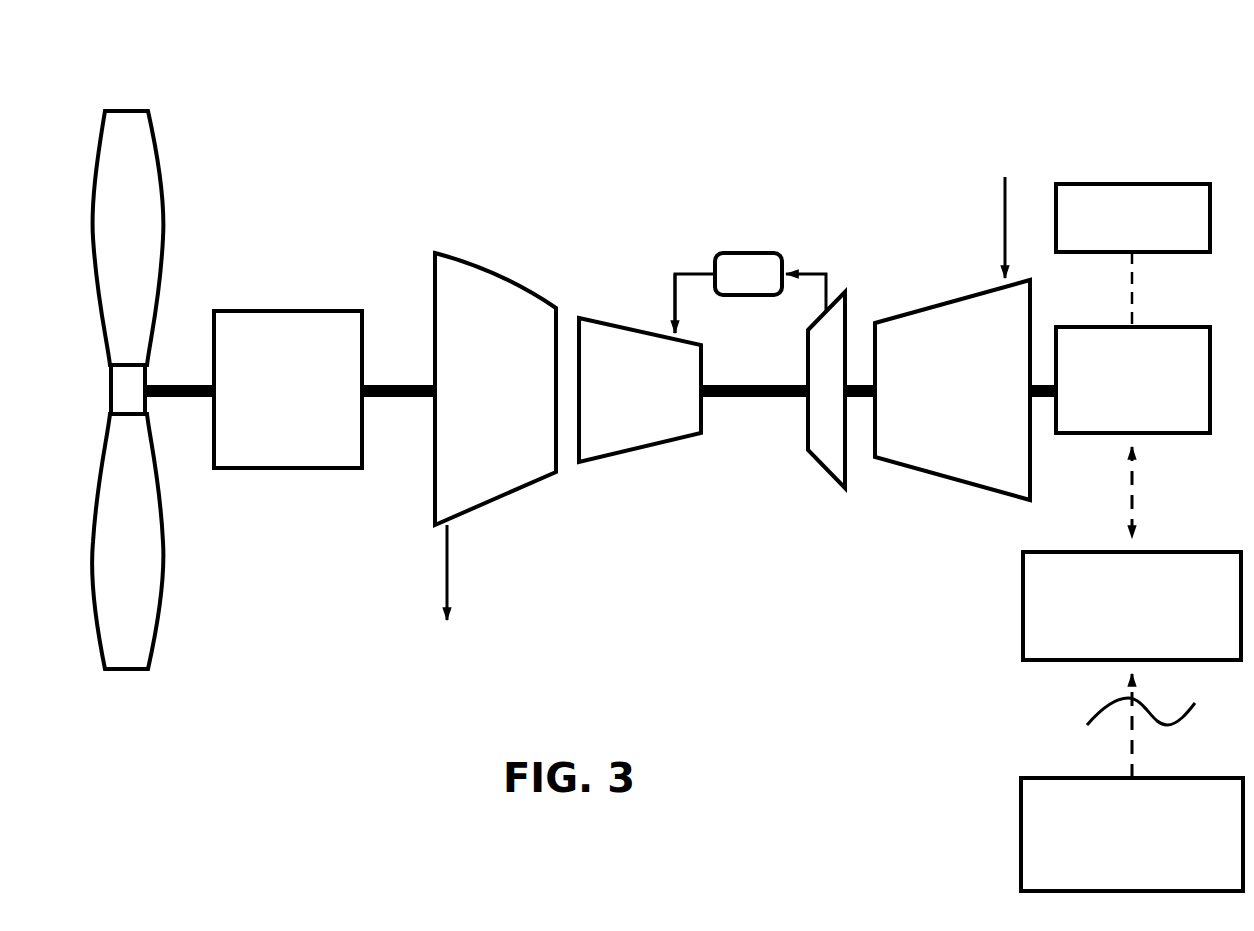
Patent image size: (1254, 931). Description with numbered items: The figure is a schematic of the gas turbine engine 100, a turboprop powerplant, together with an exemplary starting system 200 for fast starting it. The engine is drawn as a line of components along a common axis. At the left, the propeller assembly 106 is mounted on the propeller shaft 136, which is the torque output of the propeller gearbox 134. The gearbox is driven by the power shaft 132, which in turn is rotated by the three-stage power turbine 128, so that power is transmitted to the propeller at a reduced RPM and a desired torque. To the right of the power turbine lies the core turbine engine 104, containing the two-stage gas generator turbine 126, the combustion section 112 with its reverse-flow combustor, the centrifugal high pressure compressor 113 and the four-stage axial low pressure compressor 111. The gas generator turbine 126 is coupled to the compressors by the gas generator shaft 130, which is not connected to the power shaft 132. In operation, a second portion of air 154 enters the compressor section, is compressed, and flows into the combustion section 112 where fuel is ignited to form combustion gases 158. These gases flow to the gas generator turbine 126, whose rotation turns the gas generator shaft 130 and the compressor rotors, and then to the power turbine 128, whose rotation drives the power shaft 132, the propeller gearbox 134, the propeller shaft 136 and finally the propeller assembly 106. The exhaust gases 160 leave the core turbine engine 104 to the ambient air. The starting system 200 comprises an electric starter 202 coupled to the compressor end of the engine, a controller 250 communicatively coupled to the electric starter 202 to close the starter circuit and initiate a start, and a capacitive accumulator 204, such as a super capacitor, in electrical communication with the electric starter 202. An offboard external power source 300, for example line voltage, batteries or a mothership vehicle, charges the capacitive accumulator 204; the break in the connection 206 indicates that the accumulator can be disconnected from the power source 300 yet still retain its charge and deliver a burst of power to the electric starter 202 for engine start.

The gas turbine engine 100 is at (727, 133).
The core turbine engine 104 is at (629, 218).
The propeller assembly 106 is at (190, 184).
The low pressure compressor 111 is at (952, 390).
The combustion section 112 is at (764, 236).
The high pressure compressor 113 is at (820, 465).
The gas generator turbine 126 is at (640, 390).
The power turbine 128 is at (495, 389).
The gas generator shaft 130 is at (757, 398).
The power shaft 132 is at (398, 385).
The propeller gearbox 134 is at (288, 389).
The propeller shaft 136 is at (180, 385).
The second portion of air 154 is at (1002, 218).
The combustion gases 158 is at (672, 290).
The exhaust gases 160 is at (445, 572).
The starting system 200 is at (855, 700).
The electric starter 202 is at (1180, 440).
The capacitive accumulator 204 is at (1023, 622).
The disconnection 206 is at (1082, 700).
The controller 250 is at (1133, 255).
The external power source 300 is at (1021, 838).